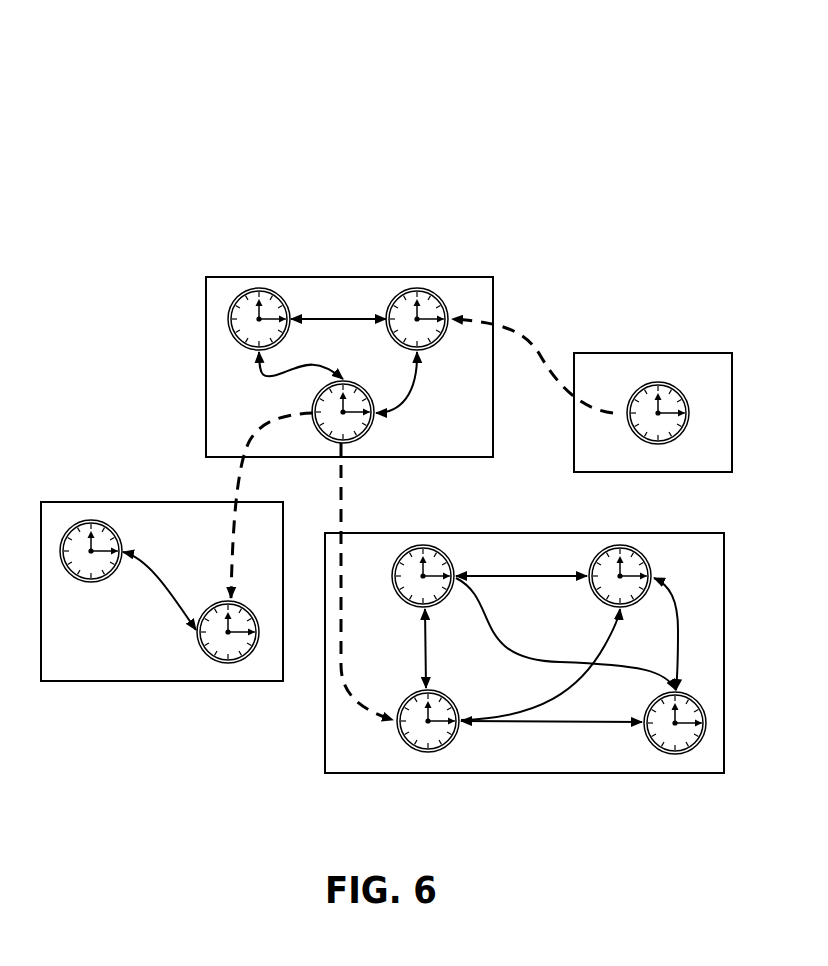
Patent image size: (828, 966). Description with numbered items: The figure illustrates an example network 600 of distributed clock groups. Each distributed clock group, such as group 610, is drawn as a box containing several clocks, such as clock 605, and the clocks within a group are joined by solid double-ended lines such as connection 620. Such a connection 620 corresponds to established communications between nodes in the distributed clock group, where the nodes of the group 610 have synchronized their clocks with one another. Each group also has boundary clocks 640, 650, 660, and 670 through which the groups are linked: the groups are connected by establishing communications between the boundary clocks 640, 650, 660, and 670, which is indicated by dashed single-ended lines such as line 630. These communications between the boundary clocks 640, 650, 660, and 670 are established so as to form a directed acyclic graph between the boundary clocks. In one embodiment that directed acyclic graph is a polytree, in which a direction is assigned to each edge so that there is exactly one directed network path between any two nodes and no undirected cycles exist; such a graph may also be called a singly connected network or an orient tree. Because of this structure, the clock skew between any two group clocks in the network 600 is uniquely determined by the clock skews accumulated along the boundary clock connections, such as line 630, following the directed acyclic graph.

The network 600 is at (386, 415).
The clock 605 is at (259, 288).
The group 610 is at (207, 362).
The connection 620 is at (345, 317).
The line 630 is at (526, 333).
The boundary clock 640 is at (357, 441).
The boundary clock 650 is at (228, 664).
The boundary clock 660 is at (430, 754).
The boundary clock 670 is at (658, 445).